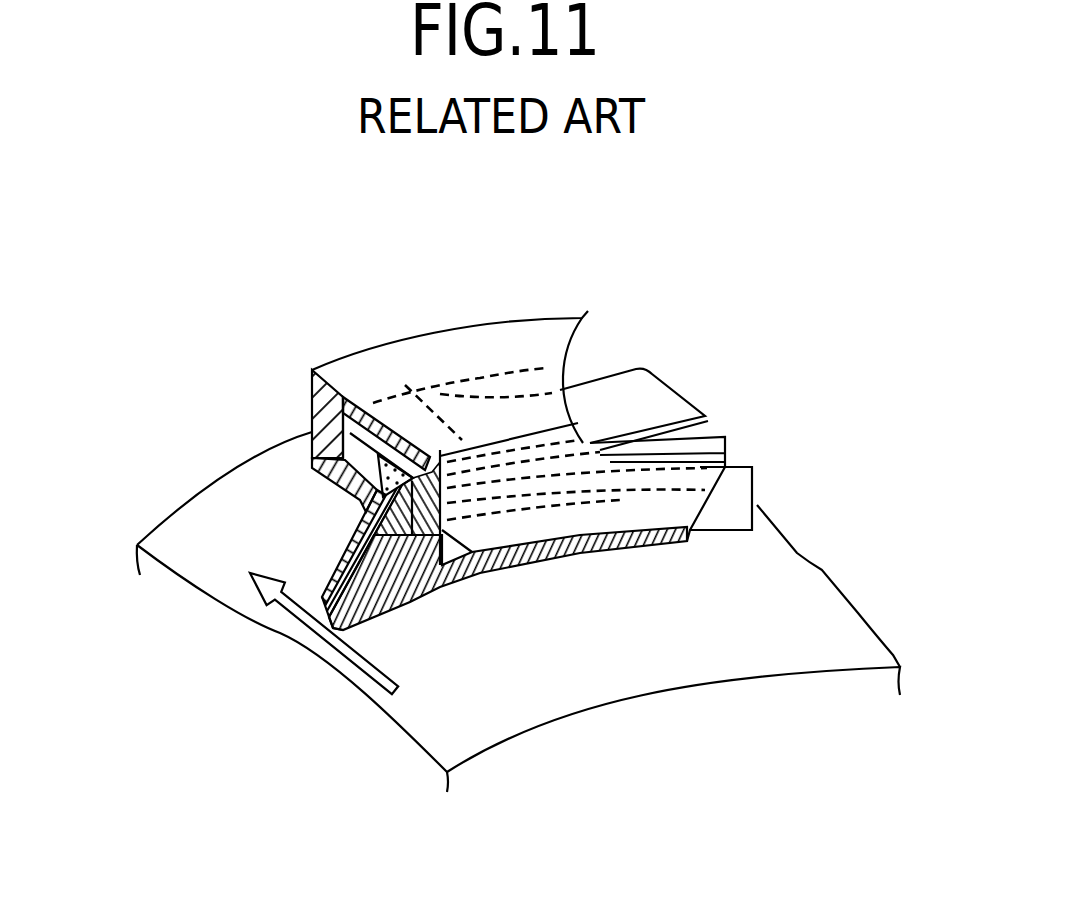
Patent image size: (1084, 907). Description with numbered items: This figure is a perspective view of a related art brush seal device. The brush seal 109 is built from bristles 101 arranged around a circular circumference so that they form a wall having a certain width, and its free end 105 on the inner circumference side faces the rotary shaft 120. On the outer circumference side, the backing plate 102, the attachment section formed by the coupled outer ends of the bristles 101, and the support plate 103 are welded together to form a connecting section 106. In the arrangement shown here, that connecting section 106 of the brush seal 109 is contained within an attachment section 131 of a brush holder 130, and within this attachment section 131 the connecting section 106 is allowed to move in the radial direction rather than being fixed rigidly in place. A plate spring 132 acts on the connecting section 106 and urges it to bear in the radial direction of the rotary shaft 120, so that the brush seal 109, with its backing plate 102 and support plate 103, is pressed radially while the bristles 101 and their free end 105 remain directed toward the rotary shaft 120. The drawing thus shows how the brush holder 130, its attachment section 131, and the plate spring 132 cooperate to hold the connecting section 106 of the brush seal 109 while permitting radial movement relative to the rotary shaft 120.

The bristles 101 is at (330, 625).
The backing plate 102 is at (343, 555).
The support plate 103 is at (482, 555).
The free end 105 is at (407, 602).
The connecting section 106 is at (335, 470).
The brush seal 109 is at (590, 553).
The rotary shaft 120 is at (797, 567).
The brush holder 130 is at (513, 328).
The attachment section 131 is at (362, 407).
The plate spring 132 is at (667, 400).